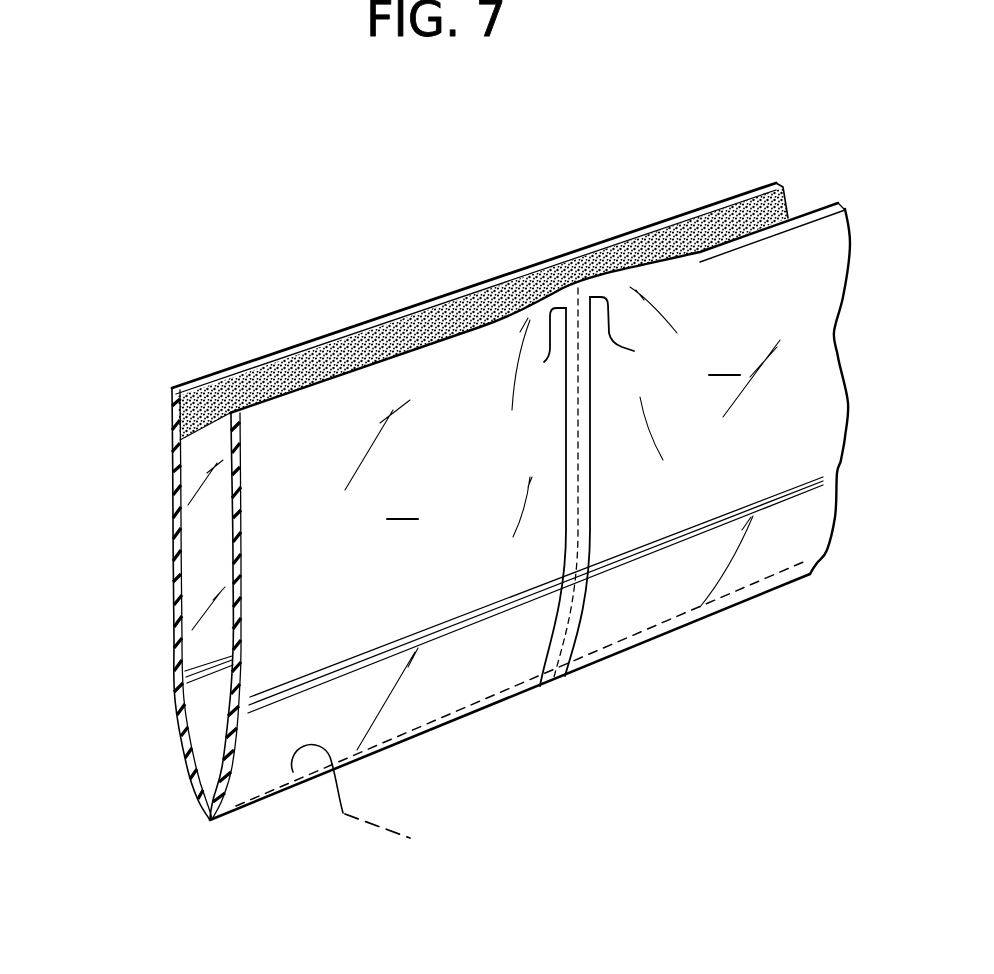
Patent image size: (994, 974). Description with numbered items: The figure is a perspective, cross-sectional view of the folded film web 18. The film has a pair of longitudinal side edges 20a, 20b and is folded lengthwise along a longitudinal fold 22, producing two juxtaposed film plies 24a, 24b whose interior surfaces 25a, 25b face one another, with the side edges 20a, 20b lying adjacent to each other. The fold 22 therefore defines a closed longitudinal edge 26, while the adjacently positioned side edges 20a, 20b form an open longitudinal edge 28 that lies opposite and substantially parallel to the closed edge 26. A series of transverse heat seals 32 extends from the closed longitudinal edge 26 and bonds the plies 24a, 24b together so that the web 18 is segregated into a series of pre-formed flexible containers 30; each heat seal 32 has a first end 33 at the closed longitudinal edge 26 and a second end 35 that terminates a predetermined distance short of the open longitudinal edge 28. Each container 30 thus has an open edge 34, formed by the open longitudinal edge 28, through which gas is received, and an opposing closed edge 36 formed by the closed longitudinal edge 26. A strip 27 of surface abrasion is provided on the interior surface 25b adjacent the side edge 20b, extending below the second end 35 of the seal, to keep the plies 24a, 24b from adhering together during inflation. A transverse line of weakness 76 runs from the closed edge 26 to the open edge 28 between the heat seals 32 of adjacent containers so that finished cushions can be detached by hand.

The film web 18 is at (172, 342).
The longitudinal side edge 20a is at (680, 217).
The longitudinal side edge 20b is at (808, 204).
The longitudinal fold 22 is at (207, 812).
The film ply 24a is at (400, 395).
The film ply 24b is at (173, 423).
The interior surface 25a is at (317, 557).
The interior surface 25b is at (202, 502).
The closed longitudinal edge 26 is at (510, 708).
The abraded strip 27 is at (652, 250).
The open longitudinal edge 28 is at (500, 318).
The pre-formed flexible container 30 is at (562, 518).
The transverse heat seal 32 is at (562, 533).
The first end 33 is at (543, 688).
The open edge 34 is at (266, 380).
The second end 35 is at (597, 345).
The closed edge 36 is at (677, 630).
The transverse line of weakness 76 is at (577, 418).